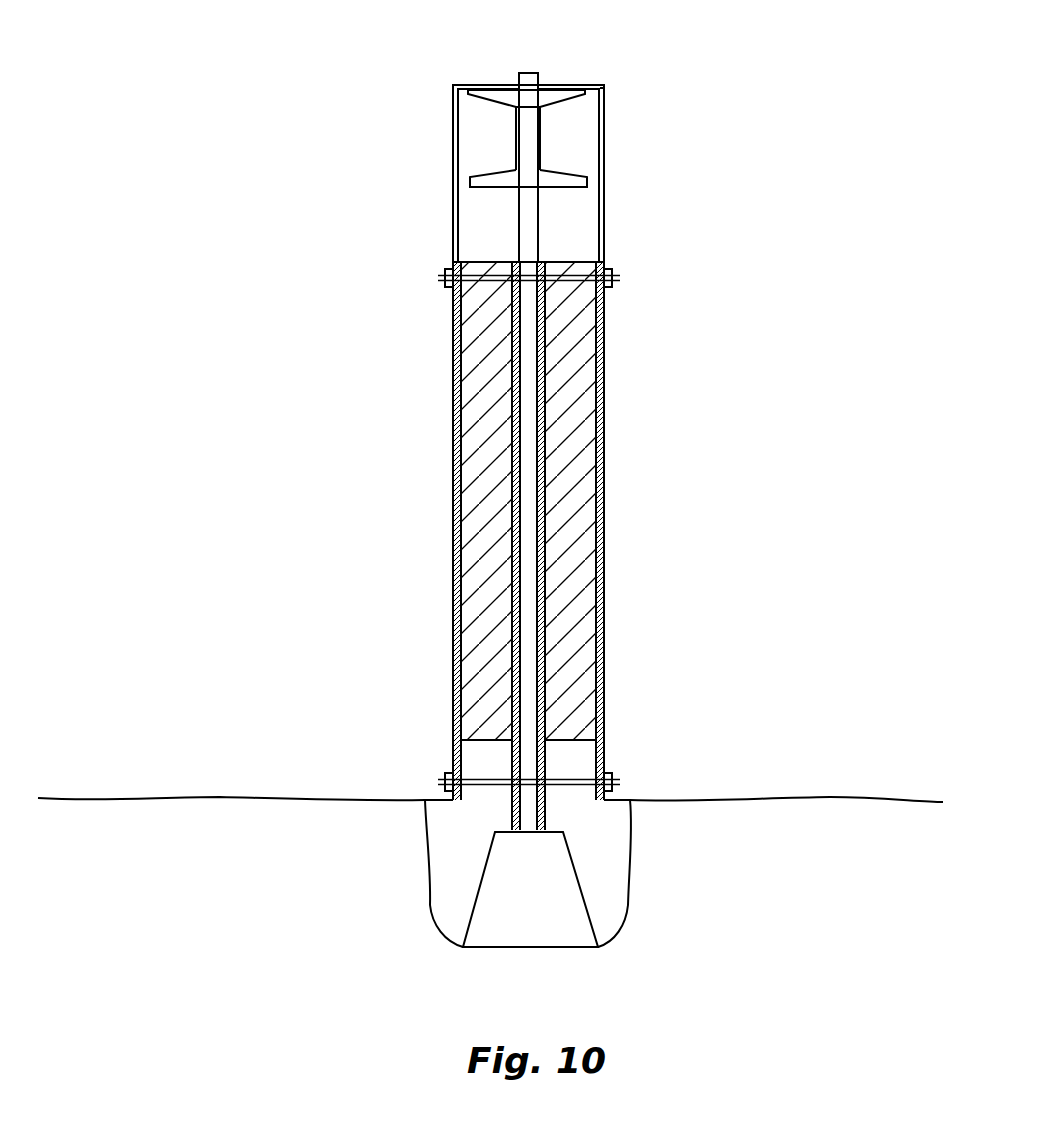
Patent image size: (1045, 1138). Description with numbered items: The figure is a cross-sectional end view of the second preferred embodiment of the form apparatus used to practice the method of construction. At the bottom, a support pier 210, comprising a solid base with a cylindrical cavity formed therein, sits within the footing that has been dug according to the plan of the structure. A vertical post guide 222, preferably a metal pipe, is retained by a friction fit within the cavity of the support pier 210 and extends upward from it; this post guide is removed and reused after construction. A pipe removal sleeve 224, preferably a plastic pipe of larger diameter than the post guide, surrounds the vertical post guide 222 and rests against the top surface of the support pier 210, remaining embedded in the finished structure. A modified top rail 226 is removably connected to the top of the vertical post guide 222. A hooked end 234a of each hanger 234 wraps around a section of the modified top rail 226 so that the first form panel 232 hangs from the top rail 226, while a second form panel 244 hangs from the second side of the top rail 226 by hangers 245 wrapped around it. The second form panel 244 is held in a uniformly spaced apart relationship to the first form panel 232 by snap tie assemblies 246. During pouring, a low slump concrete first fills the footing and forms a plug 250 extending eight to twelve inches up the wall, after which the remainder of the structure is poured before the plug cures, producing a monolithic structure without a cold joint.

The support pier 210 is at (497, 885).
The vertical post guide 222 is at (514, 217).
The pipe removal sleeve 224 is at (553, 261).
The modified top rail 226 is at (516, 150).
The first form panel 232 is at (600, 457).
The hanger 234 is at (604, 152).
The hooked end 234a is at (601, 85).
The second form panel 244 is at (456, 479).
The hanger 245 is at (452, 120).
The snap tie assembly 246 is at (447, 288).
The plug 250 is at (593, 838).